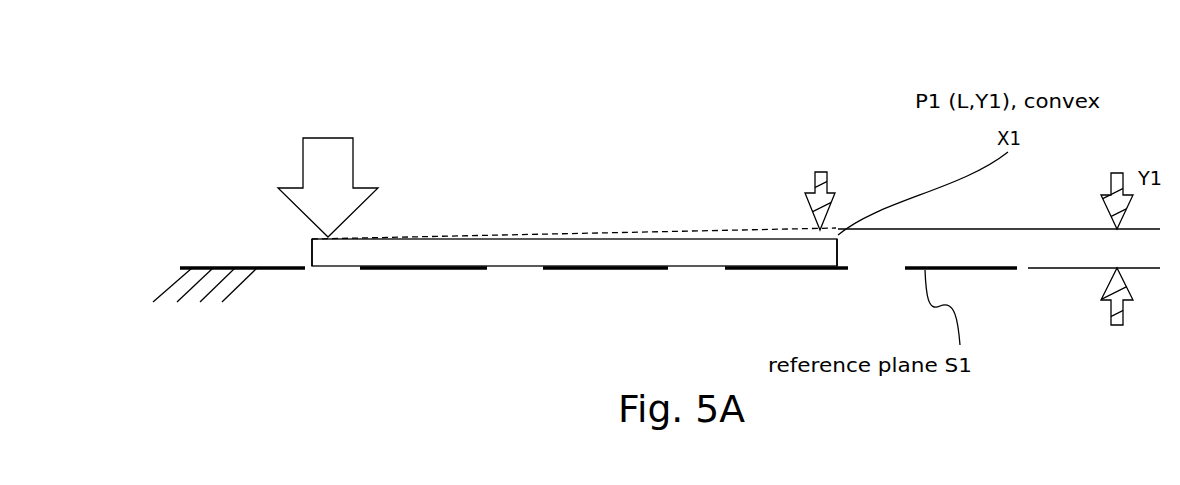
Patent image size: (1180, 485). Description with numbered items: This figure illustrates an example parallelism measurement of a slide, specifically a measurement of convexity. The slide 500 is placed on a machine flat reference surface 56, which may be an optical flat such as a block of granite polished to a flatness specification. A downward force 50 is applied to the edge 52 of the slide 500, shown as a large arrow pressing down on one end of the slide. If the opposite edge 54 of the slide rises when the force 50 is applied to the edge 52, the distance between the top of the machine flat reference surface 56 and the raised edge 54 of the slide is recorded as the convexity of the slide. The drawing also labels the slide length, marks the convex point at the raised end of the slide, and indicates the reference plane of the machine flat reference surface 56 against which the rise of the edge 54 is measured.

The downward force 50 is at (333, 82).
The edge 52 is at (311, 243).
The edge of the slide 54 is at (830, 230).
The machine flat reference surface 56 is at (838, 255).
The slide 500 is at (340, 266).